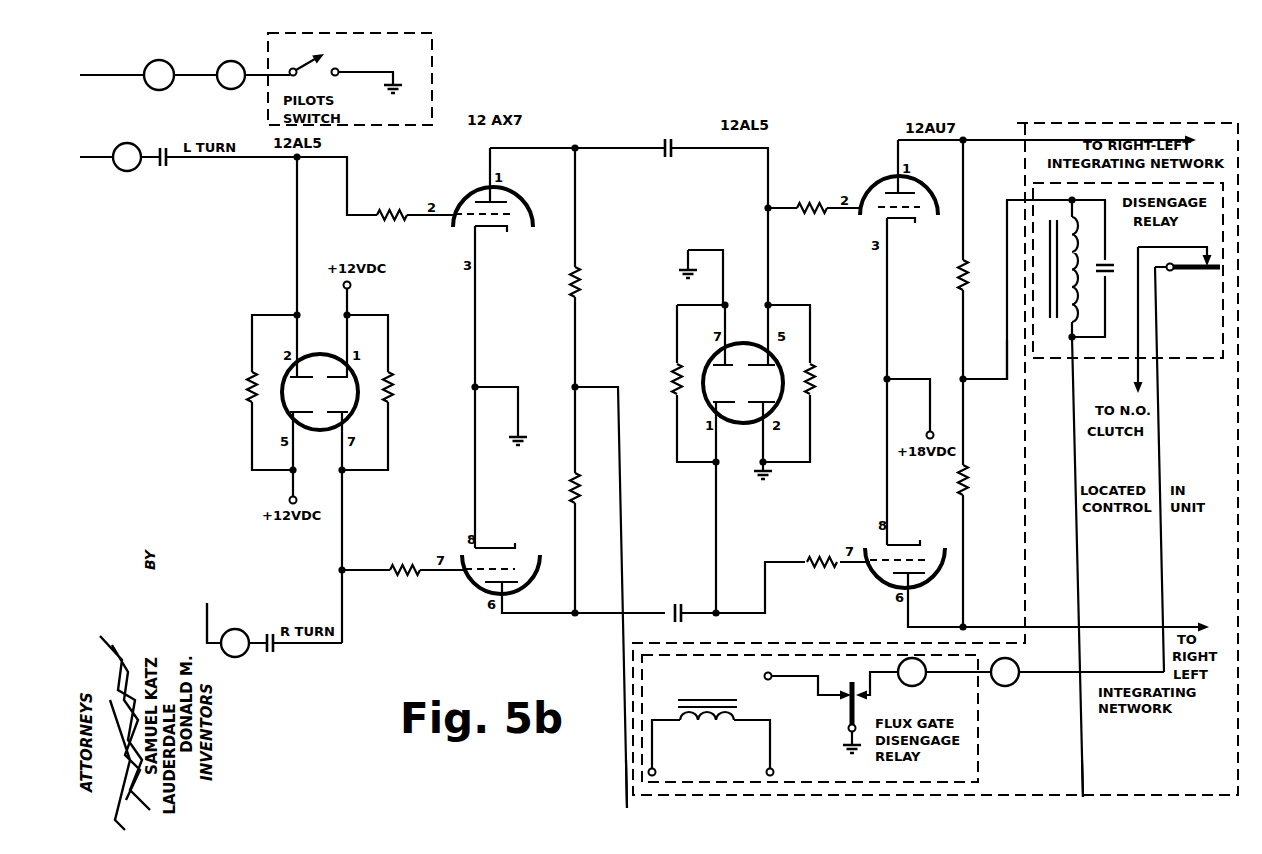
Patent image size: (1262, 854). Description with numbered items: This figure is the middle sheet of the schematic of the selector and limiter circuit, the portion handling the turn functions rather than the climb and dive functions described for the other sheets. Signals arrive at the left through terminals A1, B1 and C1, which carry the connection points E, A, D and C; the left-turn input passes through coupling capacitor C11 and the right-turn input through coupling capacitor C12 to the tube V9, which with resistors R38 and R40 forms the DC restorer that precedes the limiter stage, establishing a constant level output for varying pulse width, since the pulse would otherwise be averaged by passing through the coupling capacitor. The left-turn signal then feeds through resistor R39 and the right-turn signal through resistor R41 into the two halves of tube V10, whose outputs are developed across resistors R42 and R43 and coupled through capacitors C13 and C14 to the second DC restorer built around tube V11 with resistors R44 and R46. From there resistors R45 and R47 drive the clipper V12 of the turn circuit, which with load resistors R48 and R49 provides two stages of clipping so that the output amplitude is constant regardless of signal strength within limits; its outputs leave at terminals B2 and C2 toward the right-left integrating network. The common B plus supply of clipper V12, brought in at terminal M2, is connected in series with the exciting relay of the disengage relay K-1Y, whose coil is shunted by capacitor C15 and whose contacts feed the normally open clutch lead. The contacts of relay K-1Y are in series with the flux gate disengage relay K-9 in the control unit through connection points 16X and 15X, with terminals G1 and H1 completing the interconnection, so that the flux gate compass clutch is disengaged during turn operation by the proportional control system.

The input terminal A1 is at (112, 66).
The input terminal B1 is at (95, 149).
The input terminal C1 is at (206, 615).
The connection point E is at (159, 75).
The connection point A is at (231, 75).
The connection point D is at (127, 157).
The connection point C is at (235, 643).
The capacitor C11 is at (169, 171).
The capacitor C12 is at (276, 654).
The capacitor C13 is at (670, 137).
The capacitor C14 is at (682, 602).
The capacitor C15 is at (1116, 281).
The resistor R38 is at (233, 387).
The resistor R39 is at (394, 203).
The resistor R40 is at (404, 387).
The resistor R41 is at (405, 579).
The resistor R42 is at (593, 282).
The resistor R43 is at (593, 488).
The resistor R44 is at (659, 379).
The resistor R45 is at (812, 198).
The resistor R46 is at (827, 379).
The resistor R47 is at (821, 549).
The resistor R48 is at (949, 275).
The resistor R49 is at (985, 480).
The vacuum tube V9 (12AL5) V9 is at (320, 354).
The vacuum tube V10 (12AX7) V10 is at (493, 377).
The vacuum tube V11 (12AL5) V11 is at (743, 346).
The clipper V12 is at (901, 371).
The relay K-1Y is at (1094, 253).
The relay K-9 is at (707, 734).
The connection point 16X is at (912, 672).
The connection point 15X is at (1005, 672).
The output terminal B2 to right-left integrating network B2 is at (1184, 131).
The output terminal C2 to right-left integrating network C2 is at (1191, 617).
The terminal G1 is at (618, 787).
The terminal H1 is at (1075, 784).
The terminal M2 is at (985, 359).